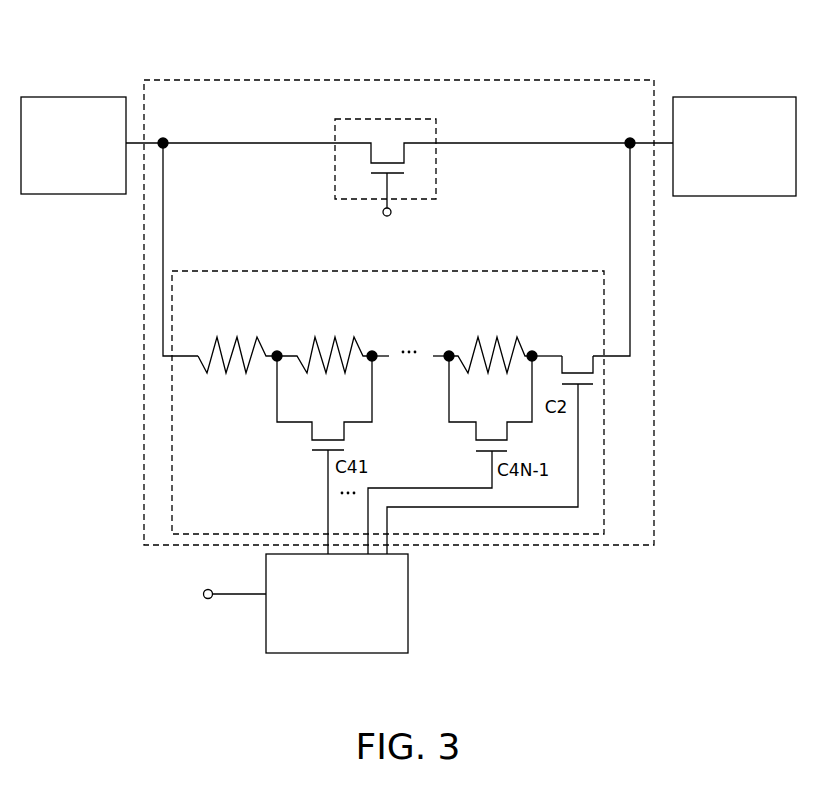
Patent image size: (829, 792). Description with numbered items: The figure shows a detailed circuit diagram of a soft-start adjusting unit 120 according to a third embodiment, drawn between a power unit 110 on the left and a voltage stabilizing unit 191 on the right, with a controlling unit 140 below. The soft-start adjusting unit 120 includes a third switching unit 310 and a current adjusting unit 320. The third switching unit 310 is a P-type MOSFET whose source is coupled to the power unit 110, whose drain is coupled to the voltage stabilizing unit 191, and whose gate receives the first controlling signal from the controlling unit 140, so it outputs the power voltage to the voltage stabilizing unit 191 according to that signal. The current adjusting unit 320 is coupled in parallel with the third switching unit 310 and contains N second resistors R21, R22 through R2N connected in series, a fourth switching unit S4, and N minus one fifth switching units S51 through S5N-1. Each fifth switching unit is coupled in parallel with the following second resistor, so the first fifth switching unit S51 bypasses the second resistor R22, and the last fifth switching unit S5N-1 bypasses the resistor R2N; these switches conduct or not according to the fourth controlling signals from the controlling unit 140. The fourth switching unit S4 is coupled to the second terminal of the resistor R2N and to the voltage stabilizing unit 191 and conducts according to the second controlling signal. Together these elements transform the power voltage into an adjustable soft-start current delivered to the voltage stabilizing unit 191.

The power unit 110 is at (73, 96).
The soft-start adjusting unit 120 is at (415, 80).
The controlling unit 140 is at (408, 593).
The voltage stabilizing unit 191 is at (719, 96).
The third switching unit 310 is at (437, 128).
The current adjusting unit 320 is at (515, 271).
The second resistor R21 is at (237, 341).
The second resistor R22 is at (324, 341).
The second resistor R2N is at (490, 341).
The fourth switching unit S4 is at (490, 442).
The fifth switching unit S51 is at (324, 455).
The fifth switching unit S5N-1 is at (450, 455).